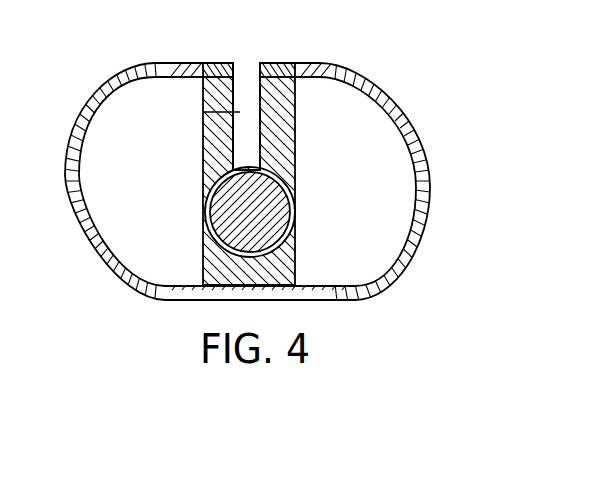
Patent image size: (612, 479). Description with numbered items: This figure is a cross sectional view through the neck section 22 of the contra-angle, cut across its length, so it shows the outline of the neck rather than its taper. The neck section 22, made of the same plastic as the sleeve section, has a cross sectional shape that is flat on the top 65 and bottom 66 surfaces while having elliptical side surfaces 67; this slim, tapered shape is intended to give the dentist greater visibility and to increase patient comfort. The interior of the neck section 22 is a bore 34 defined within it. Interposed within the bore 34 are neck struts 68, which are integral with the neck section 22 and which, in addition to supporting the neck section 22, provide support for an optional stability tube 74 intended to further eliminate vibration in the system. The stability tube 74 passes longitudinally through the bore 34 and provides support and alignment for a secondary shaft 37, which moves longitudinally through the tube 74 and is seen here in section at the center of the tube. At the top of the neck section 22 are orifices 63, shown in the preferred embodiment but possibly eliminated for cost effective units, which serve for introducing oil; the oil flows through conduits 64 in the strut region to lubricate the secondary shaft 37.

The neck section 22 is at (262, 182).
The bore 34 is at (127, 200).
The secondary shaft 37 is at (206, 244).
The orifices 63 is at (248, 72).
The conduits 64 is at (245, 112).
The top surface 65 is at (318, 72).
The bottom surface 66 is at (337, 303).
The elliptical side surfaces 67 is at (431, 188).
The neck struts 68 is at (202, 143).
The stability tube 74 is at (206, 207).